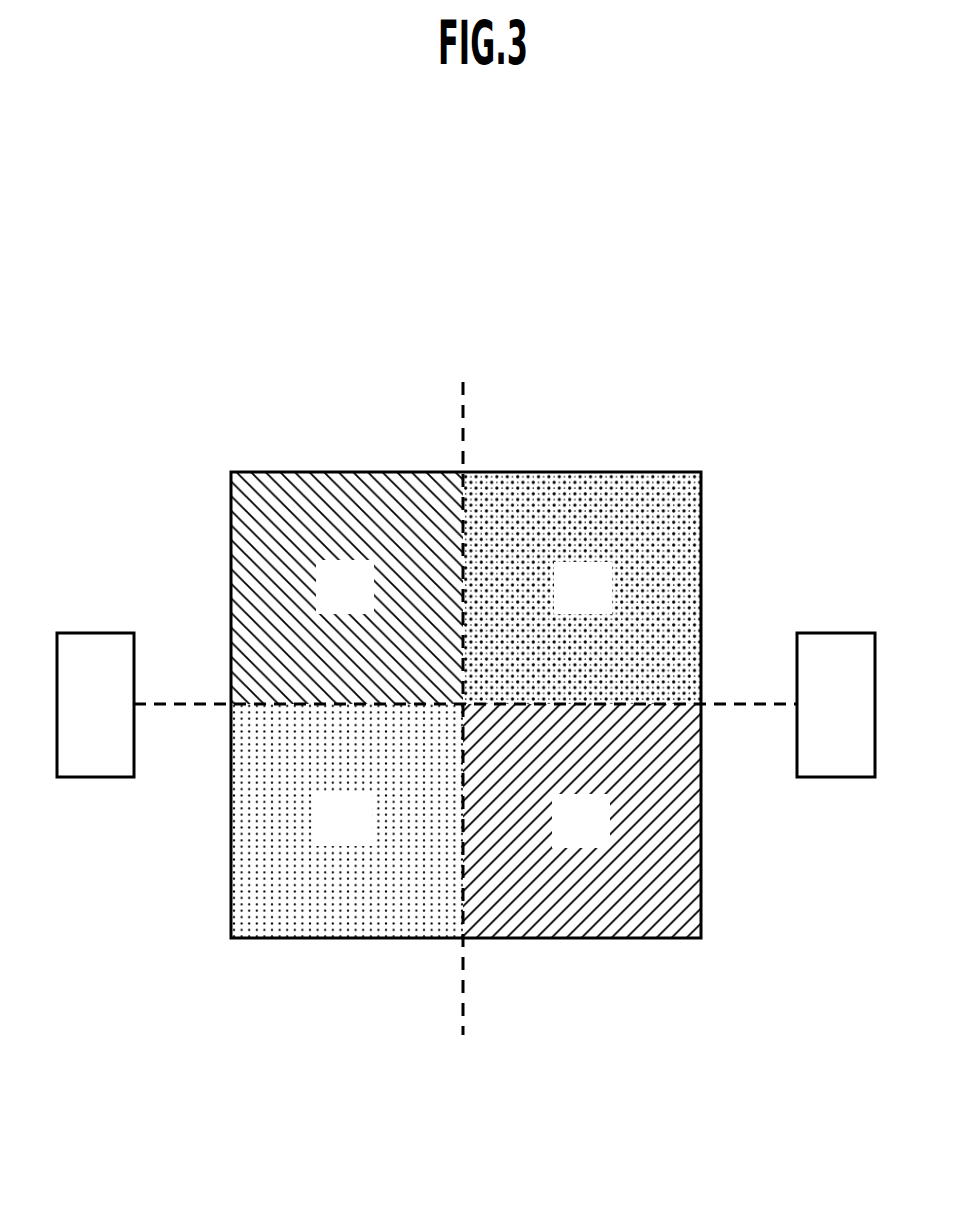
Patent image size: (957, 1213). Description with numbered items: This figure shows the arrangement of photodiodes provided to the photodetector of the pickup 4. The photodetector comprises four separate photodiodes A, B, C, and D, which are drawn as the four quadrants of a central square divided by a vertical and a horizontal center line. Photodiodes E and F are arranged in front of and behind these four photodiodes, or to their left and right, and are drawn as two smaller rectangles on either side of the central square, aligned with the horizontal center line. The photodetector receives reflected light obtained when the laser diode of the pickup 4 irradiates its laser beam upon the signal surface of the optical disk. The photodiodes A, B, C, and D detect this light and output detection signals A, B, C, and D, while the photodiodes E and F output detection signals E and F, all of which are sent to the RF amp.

The pickup 4 is at (466, 601).
The photodiode A is at (347, 588).
The photodiode B is at (582, 588).
The photodiode C is at (582, 821).
The photodiode D is at (347, 821).
The photodiode E is at (95, 705).
The photodiode F is at (836, 705).